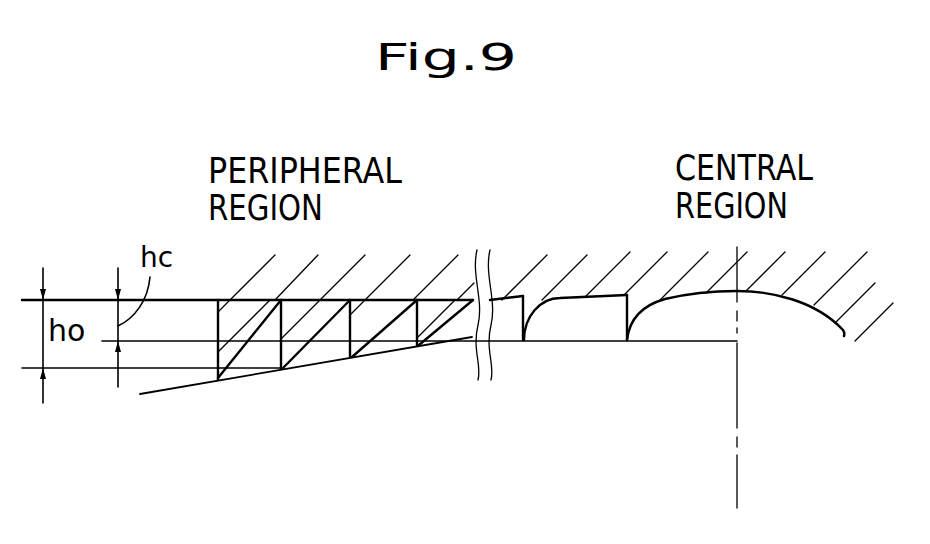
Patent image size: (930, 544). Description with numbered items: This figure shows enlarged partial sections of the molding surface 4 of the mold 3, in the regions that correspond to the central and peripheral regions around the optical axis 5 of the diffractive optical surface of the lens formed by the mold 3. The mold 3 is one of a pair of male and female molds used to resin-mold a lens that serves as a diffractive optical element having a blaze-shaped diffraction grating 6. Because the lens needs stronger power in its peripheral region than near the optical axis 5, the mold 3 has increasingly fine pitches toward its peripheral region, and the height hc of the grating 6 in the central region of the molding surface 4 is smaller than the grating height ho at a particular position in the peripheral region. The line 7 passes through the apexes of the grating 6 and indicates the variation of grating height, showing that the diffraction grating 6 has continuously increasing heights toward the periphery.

The mold 3 is at (428, 258).
The molding surface 4 is at (402, 322).
The optical axis 5 is at (739, 455).
The diffraction grating 6 is at (244, 336).
The line 7 is at (371, 358).